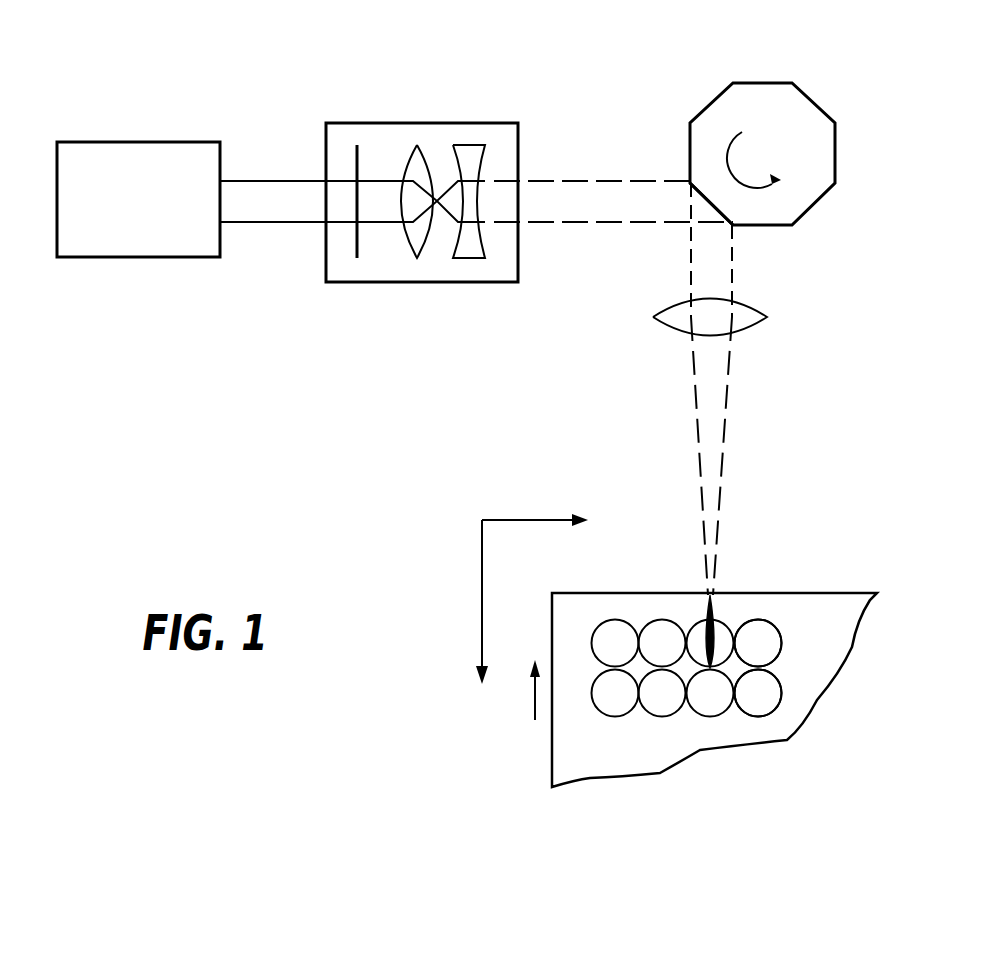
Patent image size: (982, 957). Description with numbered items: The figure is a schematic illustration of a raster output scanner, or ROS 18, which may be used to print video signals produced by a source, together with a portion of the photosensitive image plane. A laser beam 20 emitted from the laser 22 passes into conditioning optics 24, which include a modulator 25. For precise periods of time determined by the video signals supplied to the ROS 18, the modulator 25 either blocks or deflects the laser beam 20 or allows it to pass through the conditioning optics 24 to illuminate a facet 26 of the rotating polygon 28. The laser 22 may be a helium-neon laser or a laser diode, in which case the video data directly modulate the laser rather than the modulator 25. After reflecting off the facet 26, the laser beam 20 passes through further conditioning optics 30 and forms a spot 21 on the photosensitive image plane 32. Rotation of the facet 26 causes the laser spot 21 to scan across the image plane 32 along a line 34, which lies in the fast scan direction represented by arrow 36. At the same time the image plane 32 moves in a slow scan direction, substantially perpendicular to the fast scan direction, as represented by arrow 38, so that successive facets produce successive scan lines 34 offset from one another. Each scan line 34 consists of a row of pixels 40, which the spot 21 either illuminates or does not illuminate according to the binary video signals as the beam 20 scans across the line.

The raster output scanner 18 is at (372, 44).
The laser beam 20 is at (238, 178).
The spot 21 is at (717, 633).
The laser 22 is at (100, 142).
The conditioning optics 24 is at (448, 122).
The modulator 25 is at (360, 240).
The facet 26 is at (709, 198).
The rotating polygon 28 is at (812, 97).
The conditioning optics 30 is at (747, 300).
The photosensitive image plane 32 is at (820, 590).
The scan line 34 is at (781, 645).
The arrow 36 is at (533, 518).
The arrow 38 is at (480, 597).
The pixels 40 is at (613, 618).